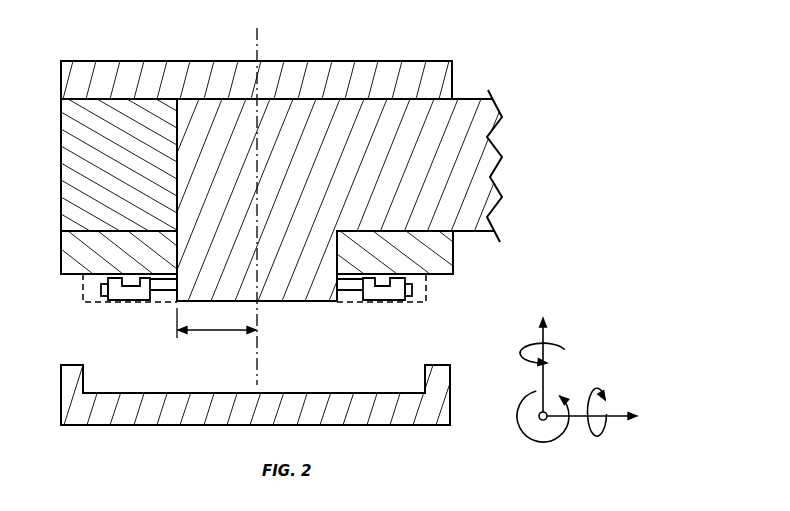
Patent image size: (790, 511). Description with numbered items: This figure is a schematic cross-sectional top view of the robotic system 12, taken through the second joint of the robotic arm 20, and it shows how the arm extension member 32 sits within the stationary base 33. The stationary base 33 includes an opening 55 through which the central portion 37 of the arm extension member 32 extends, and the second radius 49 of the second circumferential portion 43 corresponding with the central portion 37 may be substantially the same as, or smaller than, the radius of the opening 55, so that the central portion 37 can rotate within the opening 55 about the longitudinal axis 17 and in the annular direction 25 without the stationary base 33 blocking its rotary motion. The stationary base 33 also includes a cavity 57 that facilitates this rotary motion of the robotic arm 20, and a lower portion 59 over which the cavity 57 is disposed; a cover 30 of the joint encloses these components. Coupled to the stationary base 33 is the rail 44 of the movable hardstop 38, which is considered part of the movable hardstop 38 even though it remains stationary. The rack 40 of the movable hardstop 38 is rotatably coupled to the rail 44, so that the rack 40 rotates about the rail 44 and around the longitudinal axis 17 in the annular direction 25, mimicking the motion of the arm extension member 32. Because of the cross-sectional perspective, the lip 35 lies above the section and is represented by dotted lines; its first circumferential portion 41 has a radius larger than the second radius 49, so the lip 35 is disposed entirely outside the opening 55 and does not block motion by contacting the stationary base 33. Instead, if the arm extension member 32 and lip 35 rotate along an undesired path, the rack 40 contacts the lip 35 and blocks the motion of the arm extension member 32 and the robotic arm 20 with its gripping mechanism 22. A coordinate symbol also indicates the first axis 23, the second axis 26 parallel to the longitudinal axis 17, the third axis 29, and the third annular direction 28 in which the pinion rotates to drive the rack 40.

The robotic system 12 is at (532, 52).
The longitudinal axis 17 is at (257, 354).
The robotic arm 20 is at (403, 107).
The gripping mechanism 22 is at (514, 417).
The first axis 23 is at (541, 421).
The second annular direction 25 is at (565, 345).
The second axis 26 is at (541, 336).
The third annular direction 28 is at (600, 395).
The third axis 29 is at (618, 421).
The cover 30 is at (247, 425).
The arm extension member 32 is at (323, 258).
The stationary base 33 is at (317, 61).
The lip 35 is at (370, 304).
The central portion 37 is at (283, 302).
The movable hardstop 38 is at (133, 304).
The rack 40 is at (120, 301).
The first circumferential portion 41 is at (426, 287).
The second circumferential portion 43 is at (172, 290).
The rail 44 is at (101, 290).
The second radius 49 is at (220, 333).
The opening 55 is at (185, 279).
The cavity 57 is at (78, 158).
The lower portion 59 is at (61, 160).